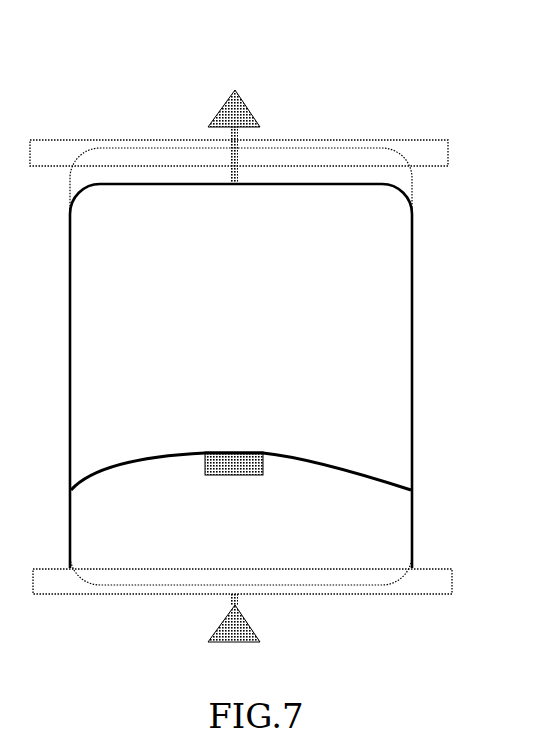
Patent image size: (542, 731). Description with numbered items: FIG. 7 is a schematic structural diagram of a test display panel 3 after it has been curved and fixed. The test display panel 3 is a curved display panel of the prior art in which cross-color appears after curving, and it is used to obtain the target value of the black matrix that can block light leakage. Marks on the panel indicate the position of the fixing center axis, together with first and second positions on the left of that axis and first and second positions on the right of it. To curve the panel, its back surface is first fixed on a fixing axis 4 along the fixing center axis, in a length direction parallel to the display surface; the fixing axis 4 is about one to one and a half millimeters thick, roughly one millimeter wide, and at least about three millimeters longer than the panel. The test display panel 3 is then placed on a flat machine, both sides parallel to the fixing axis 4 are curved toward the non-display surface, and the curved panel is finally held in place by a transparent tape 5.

The test display panel 3 is at (388, 382).
The fixing axis 4 is at (260, 642).
The transparent tape 5 is at (425, 155).